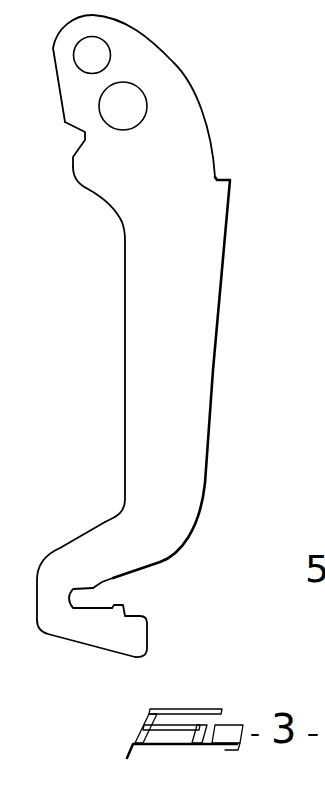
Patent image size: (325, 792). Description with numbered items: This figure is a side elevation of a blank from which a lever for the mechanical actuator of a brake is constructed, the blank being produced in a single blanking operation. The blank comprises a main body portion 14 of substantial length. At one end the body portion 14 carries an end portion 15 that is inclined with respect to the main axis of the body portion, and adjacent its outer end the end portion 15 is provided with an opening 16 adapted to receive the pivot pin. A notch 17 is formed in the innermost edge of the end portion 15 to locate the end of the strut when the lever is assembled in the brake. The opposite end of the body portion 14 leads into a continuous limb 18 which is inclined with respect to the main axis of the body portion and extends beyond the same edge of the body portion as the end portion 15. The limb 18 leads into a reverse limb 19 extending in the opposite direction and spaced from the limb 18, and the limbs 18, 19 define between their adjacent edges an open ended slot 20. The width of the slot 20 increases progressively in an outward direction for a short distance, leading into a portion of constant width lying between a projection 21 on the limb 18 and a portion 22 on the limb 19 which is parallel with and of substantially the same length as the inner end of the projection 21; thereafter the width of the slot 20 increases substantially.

The main body portion 14 is at (212, 298).
The end portion 15 is at (148, 68).
The opening 16 is at (95, 57).
The notch 17 is at (84, 141).
The continuous limb 18 is at (55, 555).
The reverse limb 19 is at (87, 627).
The open ended slot 20 is at (97, 601).
The projection 21 is at (100, 584).
The portion 22 is at (112, 612).